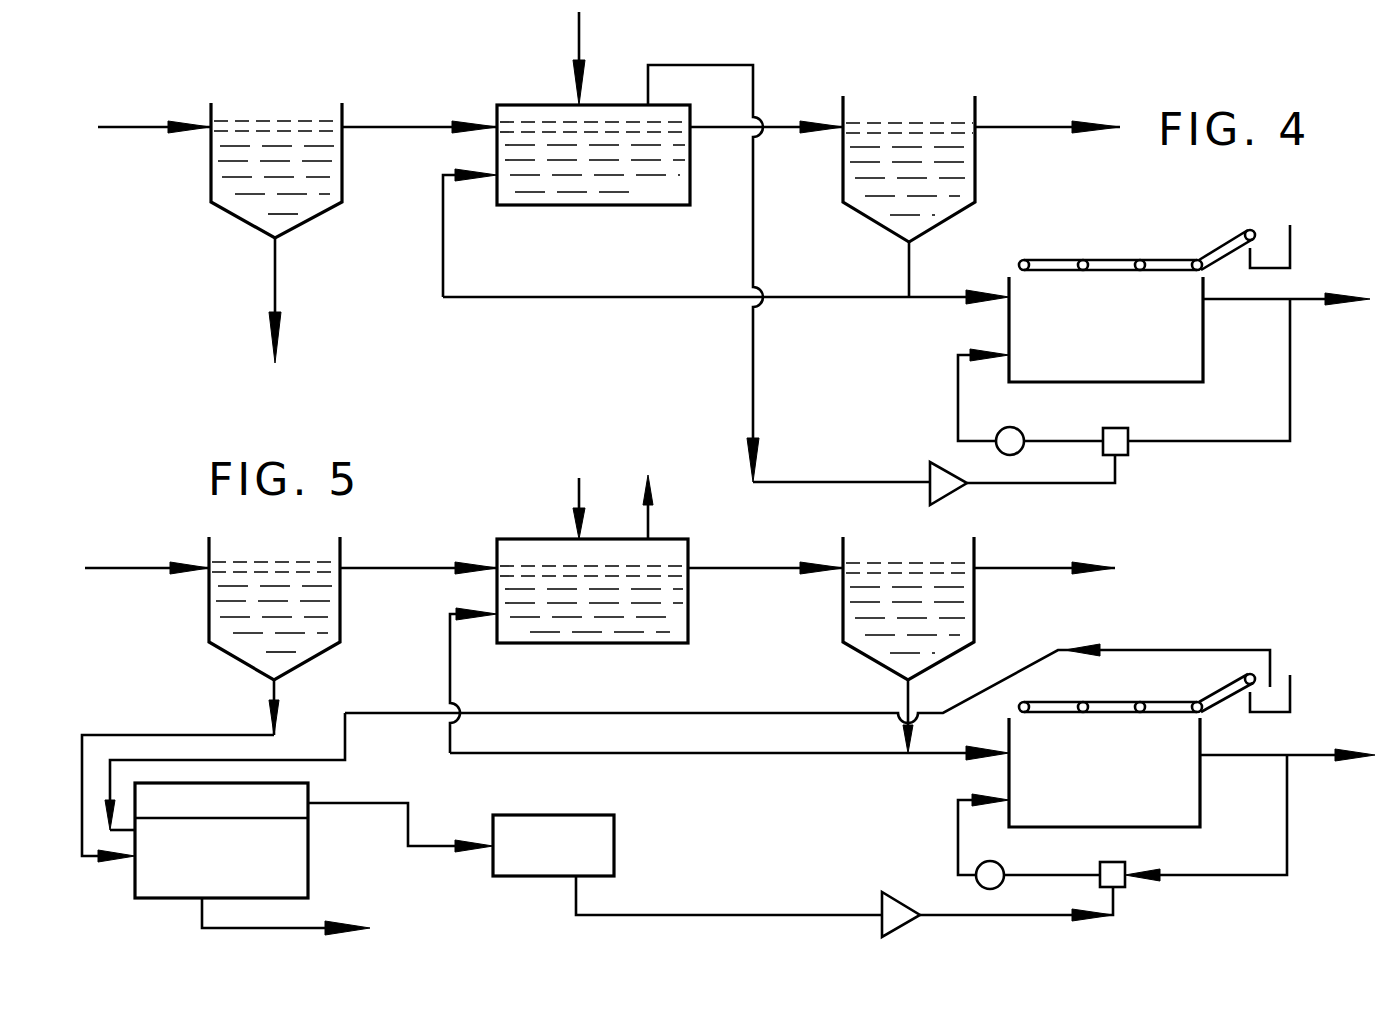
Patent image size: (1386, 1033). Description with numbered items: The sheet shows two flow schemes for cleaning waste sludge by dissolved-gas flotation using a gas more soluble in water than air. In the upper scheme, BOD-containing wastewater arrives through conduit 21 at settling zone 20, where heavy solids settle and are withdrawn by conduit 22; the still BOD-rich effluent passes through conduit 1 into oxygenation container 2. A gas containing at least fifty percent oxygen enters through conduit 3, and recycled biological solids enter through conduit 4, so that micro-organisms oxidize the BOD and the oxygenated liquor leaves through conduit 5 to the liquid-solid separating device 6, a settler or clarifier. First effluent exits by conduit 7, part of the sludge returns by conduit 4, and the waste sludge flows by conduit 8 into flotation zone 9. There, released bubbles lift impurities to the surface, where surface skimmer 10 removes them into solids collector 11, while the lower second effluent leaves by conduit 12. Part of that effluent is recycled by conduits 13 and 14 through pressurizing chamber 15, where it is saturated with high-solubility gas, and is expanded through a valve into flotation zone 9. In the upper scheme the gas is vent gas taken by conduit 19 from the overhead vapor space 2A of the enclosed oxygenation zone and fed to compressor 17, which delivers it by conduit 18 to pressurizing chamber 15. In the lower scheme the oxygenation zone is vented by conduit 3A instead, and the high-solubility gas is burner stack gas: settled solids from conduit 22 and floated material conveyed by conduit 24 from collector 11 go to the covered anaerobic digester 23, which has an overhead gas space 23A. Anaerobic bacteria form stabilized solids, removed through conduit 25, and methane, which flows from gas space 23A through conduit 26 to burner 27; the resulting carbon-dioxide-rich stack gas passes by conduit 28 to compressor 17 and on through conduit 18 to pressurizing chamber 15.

In FIG. 4, the conduit 1 is at (444, 125).
In FIG. 5, the conduit 1 is at (404, 568).
In FIG. 4, the oxygenation container 2 is at (495, 159).
In FIG. 5, the oxygenation container 2 is at (514, 539).
In FIG. 4, the overhead vapor space 2A is at (543, 105).
In FIG. 4, the conduit 3 is at (579, 43).
In FIG. 5, the conduit 3 is at (579, 508).
In FIG. 5, the conduit 3A is at (645, 523).
In FIG. 4, the conduit 4 is at (596, 298).
In FIG. 5, the conduit 4 is at (451, 687).
In FIG. 4, the conduit 5 is at (805, 125).
In FIG. 5, the conduit 5 is at (775, 568).
In FIG. 4, the liquid-solid separating device 6 is at (976, 191).
In FIG. 5, the liquid-solid separating device 6 is at (974, 611).
In FIG. 4, the conduit 7 is at (1042, 125).
In FIG. 5, the conduit 7 is at (1032, 568).
In FIG. 4, the conduit 8 is at (950, 299).
In FIG. 5, the conduit 8 is at (955, 754).
In FIG. 4, the flotation zone 9 is at (1203, 348).
In FIG. 5, the flotation zone 9 is at (1009, 774).
In FIG. 4, the surface skimmer 10 is at (1119, 262).
In FIG. 5, the surface skimmer 10 is at (1115, 705).
In FIG. 4, the solids collector 11 is at (1290, 250).
In FIG. 5, the solids collector 11 is at (1288, 698).
In FIG. 4, the conduit 12 is at (1334, 296).
In FIG. 5, the conduit 12 is at (1310, 755).
In FIG. 4, the conduit 13 is at (1291, 381).
In FIG. 5, the conduit 13 is at (1285, 854).
In FIG. 4, the conduit 14 is at (962, 439).
In FIG. 5, the conduit 14 is at (1056, 862).
In FIG. 4, the pressurizing chamber 15 is at (1120, 428).
In FIG. 5, the pressurizing chamber 15 is at (1112, 864).
In FIG. 4, the compressor 17 is at (946, 498).
In FIG. 5, the compressor 17 is at (913, 876).
In FIG. 4, the conduit 18 is at (1082, 485).
In FIG. 5, the conduit 18 is at (1114, 906).
In FIG. 4, the conduit 19 is at (864, 482).
In FIG. 4, the settling zone 20 is at (211, 171).
In FIG. 5, the settling zone 20 is at (209, 603).
In FIG. 4, the conduit 21 is at (154, 126).
In FIG. 5, the conduit 21 is at (152, 568).
In FIG. 4, the conduit 22 is at (276, 291).
In FIG. 5, the conduit 22 is at (276, 707).
In FIG. 5, the anaerobic digester 23 is at (300, 784).
In FIG. 5, the overhead gas space 23A is at (237, 813).
In FIG. 5, the conduit 24 is at (707, 718).
In FIG. 5, the conduit 25 is at (202, 920).
In FIG. 5, the conduit 26 is at (383, 804).
In FIG. 5, the burner 27 is at (588, 815).
In FIG. 5, the conduit 28 is at (699, 914).